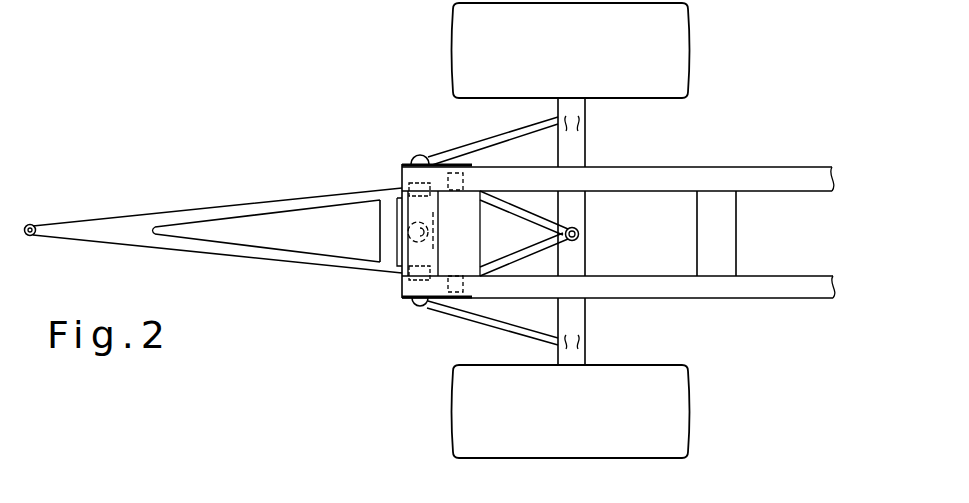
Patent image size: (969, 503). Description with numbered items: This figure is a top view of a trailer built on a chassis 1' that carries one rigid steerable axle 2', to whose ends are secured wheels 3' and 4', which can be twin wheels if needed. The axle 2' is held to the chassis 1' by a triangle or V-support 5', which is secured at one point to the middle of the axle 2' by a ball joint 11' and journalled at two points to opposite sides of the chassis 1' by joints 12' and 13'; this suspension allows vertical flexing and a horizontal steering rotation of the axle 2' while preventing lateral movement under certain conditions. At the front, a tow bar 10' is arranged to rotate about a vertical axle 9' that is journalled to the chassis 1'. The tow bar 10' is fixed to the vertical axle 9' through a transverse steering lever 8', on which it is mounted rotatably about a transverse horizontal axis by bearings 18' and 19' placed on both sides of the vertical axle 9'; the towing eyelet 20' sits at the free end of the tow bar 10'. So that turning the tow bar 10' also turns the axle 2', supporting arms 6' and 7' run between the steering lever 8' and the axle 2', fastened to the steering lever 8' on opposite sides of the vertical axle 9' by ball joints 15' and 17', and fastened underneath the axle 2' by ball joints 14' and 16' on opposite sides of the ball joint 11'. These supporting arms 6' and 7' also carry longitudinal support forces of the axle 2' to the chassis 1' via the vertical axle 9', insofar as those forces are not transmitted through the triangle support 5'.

The chassis 1' is at (618, 210).
The rigid steerable axle 2' is at (572, 199).
The wheel 3' is at (591, 411).
The wheel 4' is at (592, 50).
The triangle or V-support 5' is at (554, 233).
The supporting arm 6' is at (492, 327).
The supporting arm 7' is at (493, 130).
The transverse steering lever 8' is at (388, 242).
The vertical axle 9' is at (387, 233).
The tow bar 10' is at (217, 212).
The ball joint 11' is at (620, 222).
The joint 12' is at (427, 326).
The joint 13' is at (462, 224).
The ball joint 14' is at (614, 334).
The ball joint 15' is at (386, 329).
The ball joint 16' is at (605, 122).
The ball joint 17' is at (398, 128).
The bearing 18' is at (369, 279).
The bearing 19' is at (378, 159).
The towing eyelet 20' is at (67, 206).